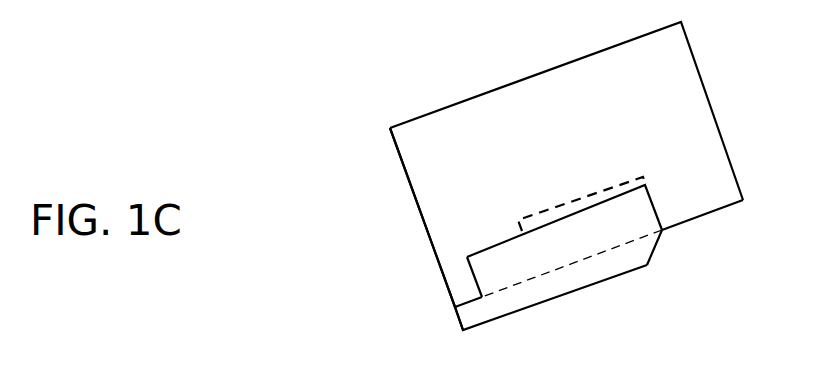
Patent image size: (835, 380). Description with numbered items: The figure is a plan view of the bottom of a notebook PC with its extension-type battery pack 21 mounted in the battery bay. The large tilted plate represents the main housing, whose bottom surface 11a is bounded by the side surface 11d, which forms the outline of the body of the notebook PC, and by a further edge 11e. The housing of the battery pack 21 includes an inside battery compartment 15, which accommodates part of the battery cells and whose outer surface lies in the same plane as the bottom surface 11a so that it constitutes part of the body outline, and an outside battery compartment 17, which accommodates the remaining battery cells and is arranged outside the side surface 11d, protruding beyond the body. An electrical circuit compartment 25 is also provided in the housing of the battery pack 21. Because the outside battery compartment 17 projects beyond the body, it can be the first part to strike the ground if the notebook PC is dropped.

The bottom surface 11a is at (520, 138).
The side surface 11d is at (708, 215).
The side edge of substrate 11e is at (427, 233).
The inside battery compartment 15 is at (631, 222).
The outside battery compartment 17 is at (556, 288).
The battery pack 21 is at (667, 268).
The electrical circuit compartment 25 is at (573, 205).